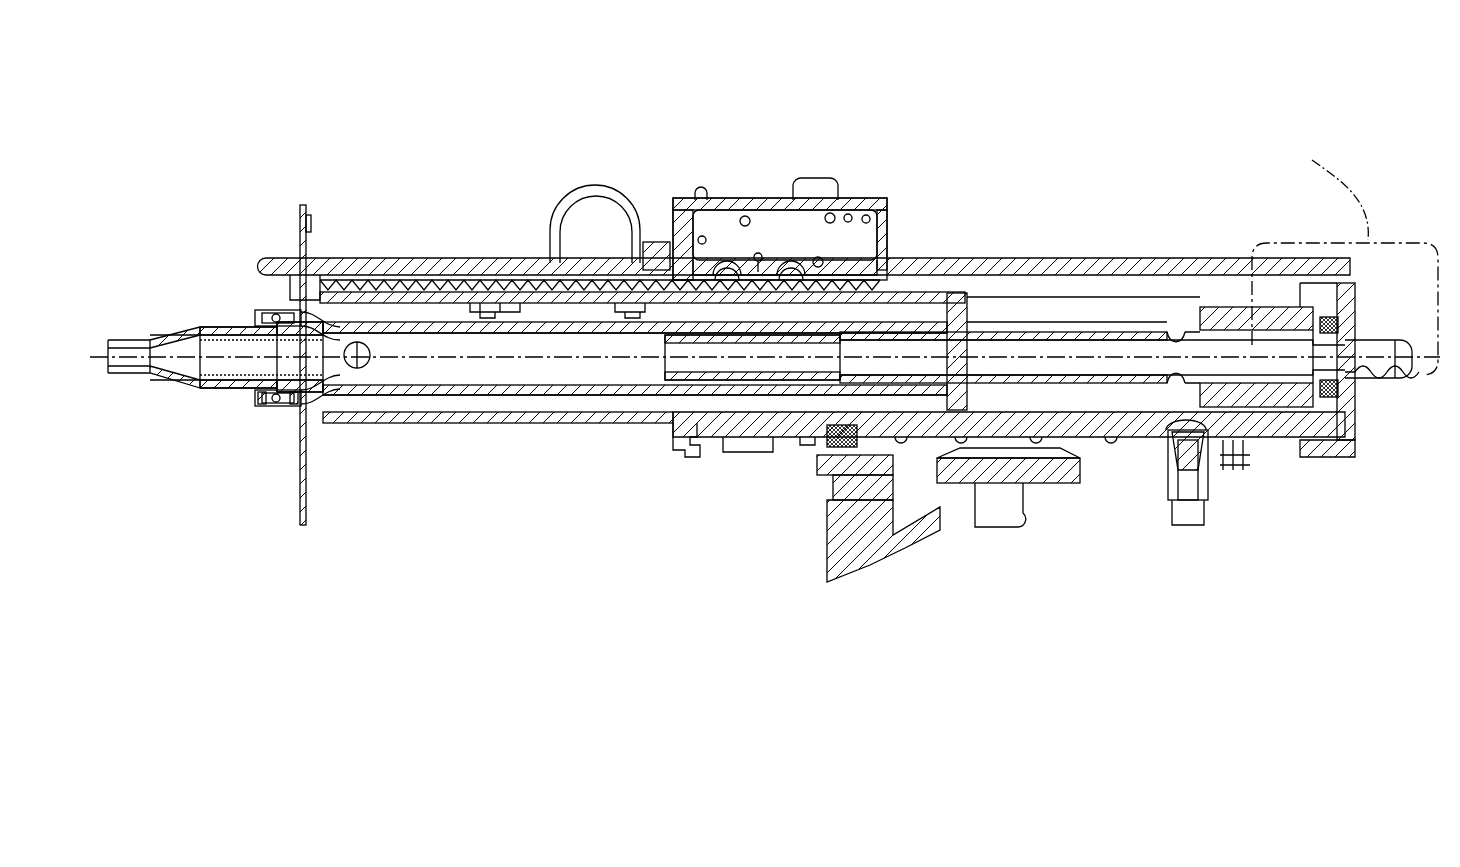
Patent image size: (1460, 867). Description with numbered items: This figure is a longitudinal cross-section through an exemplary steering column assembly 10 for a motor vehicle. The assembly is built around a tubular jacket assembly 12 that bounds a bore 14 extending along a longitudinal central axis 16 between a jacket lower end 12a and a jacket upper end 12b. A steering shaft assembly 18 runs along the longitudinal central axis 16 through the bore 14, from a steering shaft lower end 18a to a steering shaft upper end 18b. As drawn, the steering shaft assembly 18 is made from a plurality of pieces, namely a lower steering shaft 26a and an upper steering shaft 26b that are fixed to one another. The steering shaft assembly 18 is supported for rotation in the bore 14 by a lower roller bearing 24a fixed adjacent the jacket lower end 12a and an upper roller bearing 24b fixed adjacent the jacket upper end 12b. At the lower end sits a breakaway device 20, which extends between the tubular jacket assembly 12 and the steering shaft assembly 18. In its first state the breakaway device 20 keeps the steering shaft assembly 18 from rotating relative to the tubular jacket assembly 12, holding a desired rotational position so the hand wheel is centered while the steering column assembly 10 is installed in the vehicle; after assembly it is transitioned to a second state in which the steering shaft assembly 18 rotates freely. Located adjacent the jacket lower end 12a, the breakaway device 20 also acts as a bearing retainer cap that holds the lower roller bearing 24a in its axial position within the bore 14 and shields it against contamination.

The steering column assembly 10 is at (1087, 110).
The tubular jacket assembly 12 is at (1117, 268).
The jacket lower end 12a is at (1351, 440).
The jacket upper end 12b is at (258, 404).
The bore 14 is at (450, 399).
The longitudinal central axis 16 is at (232, 350).
The steering shaft assembly 18 is at (181, 325).
The steering shaft lower end 18a is at (1418, 362).
The steering shaft upper end 18b is at (112, 340).
The breakaway device 20 is at (1358, 407).
The lower roller bearing 24a is at (1328, 408).
The upper roller bearing 24b is at (272, 416).
The lower steering shaft 26a is at (1047, 330).
The upper steering shaft 26b is at (455, 325).